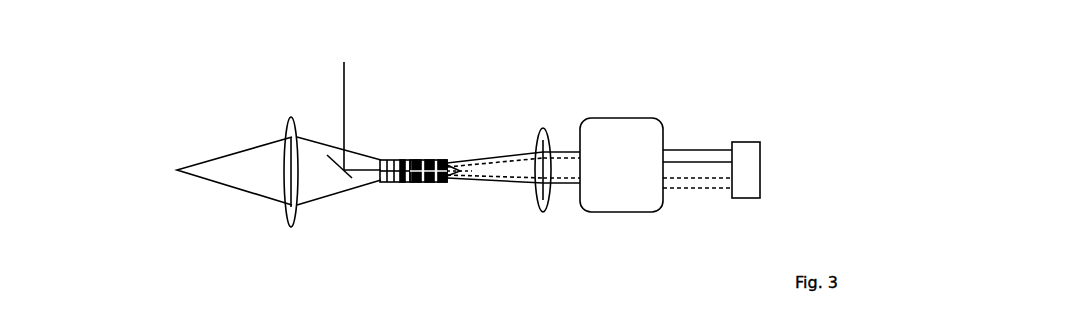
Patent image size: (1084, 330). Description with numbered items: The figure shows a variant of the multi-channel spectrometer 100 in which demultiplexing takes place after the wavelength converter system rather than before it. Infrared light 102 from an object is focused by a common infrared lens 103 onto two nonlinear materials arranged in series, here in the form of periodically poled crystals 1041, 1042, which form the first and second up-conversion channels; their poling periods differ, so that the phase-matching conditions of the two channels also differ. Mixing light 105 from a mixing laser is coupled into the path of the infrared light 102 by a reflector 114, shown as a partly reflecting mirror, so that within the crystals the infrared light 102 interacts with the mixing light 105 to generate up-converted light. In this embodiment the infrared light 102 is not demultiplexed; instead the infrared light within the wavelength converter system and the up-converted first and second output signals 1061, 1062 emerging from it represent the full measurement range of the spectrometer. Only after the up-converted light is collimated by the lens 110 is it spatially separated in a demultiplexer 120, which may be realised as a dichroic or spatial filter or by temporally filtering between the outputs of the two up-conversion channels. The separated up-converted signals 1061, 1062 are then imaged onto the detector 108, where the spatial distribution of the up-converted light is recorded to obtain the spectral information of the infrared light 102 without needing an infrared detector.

The spectrometer 100 is at (787, 41).
The infrared light 102 is at (279, 153).
The infrared lens 103 is at (274, 153).
The mixing light 105 is at (344, 91).
The reflector 114 is at (357, 204).
The first periodically poled crystal 1041 is at (391, 147).
The second periodically poled crystal 1042 is at (438, 150).
The first output signal 1061 is at (506, 191).
The second output signal 1062 is at (513, 217).
The lens 110 is at (557, 149).
The demultiplexer 120 is at (632, 183).
The detector 108 is at (730, 142).